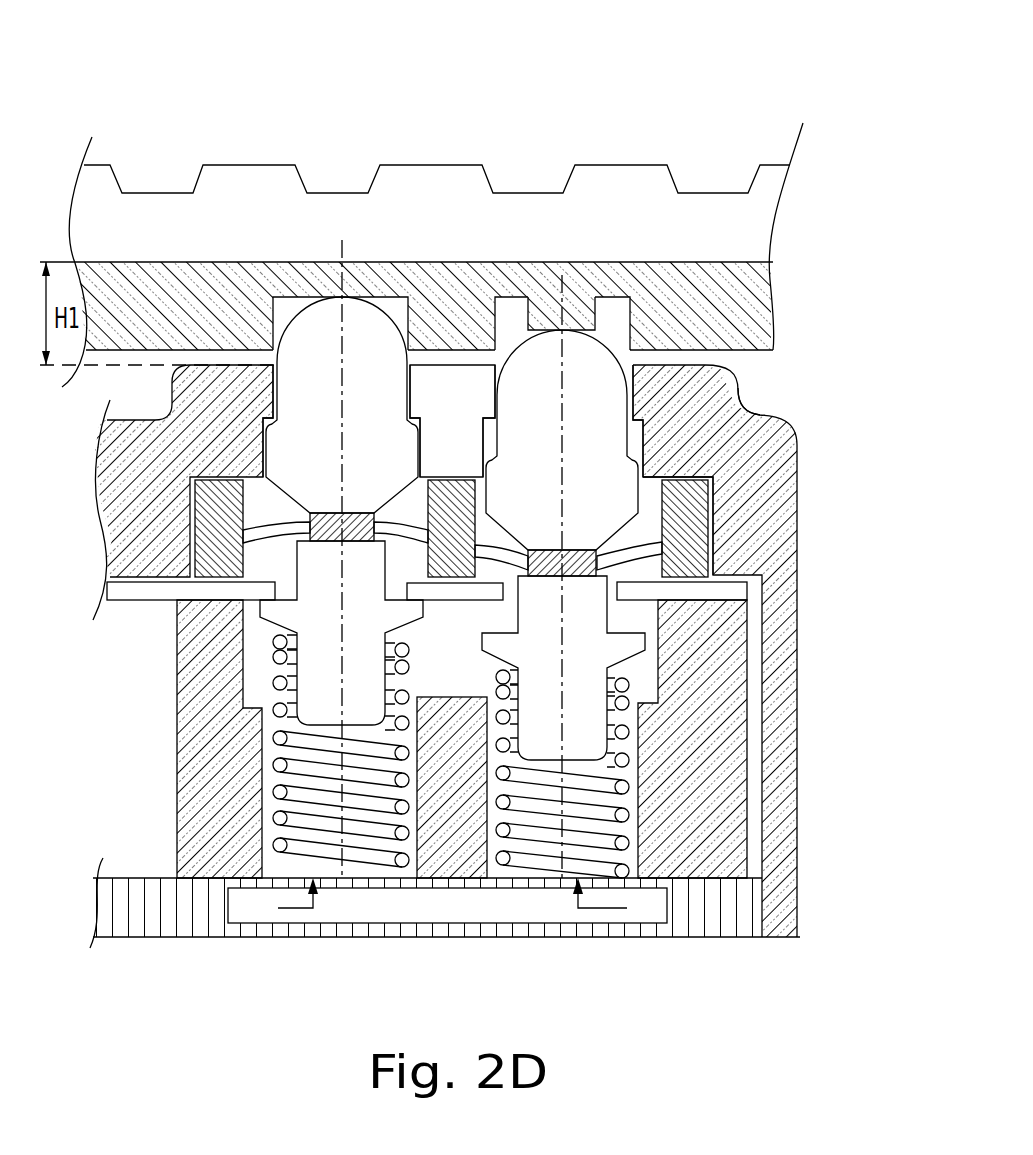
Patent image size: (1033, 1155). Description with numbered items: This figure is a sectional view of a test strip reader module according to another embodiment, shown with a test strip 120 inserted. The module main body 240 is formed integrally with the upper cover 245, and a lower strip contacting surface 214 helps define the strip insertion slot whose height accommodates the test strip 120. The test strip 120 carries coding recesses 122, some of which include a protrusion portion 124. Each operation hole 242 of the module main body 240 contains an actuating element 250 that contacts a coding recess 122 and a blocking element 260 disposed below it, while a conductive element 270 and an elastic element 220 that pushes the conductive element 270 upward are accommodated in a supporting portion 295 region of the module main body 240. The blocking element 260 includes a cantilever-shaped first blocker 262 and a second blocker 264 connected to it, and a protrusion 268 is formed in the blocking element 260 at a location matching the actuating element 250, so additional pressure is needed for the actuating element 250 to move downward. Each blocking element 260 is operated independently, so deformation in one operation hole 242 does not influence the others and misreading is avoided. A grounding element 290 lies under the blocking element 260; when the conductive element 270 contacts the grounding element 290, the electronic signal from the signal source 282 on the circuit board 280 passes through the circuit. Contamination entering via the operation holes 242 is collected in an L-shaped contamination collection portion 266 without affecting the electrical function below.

The test strip 120 is at (717, 297).
The coding recess 122 is at (288, 312).
The protrusion portion 124 is at (578, 317).
The lower strip contacting surface 214 is at (748, 387).
The elastic element 220 is at (603, 813).
The module main body 240 is at (772, 428).
The operation hole 242 is at (408, 377).
The upper cover 245 is at (712, 217).
The actuating element 250 is at (362, 370).
The blocking element 260 is at (718, 514).
The first blocker 262 is at (640, 553).
The second blocker 264 is at (692, 500).
The L-shaped contamination collection portion 266 is at (648, 523).
The protrusion 268 is at (570, 560).
The conductive element 270 is at (585, 735).
The circuit board 280 is at (752, 877).
The signal source 282 is at (537, 905).
The grounding element 290 is at (735, 590).
The supporting portion 295 is at (185, 705).